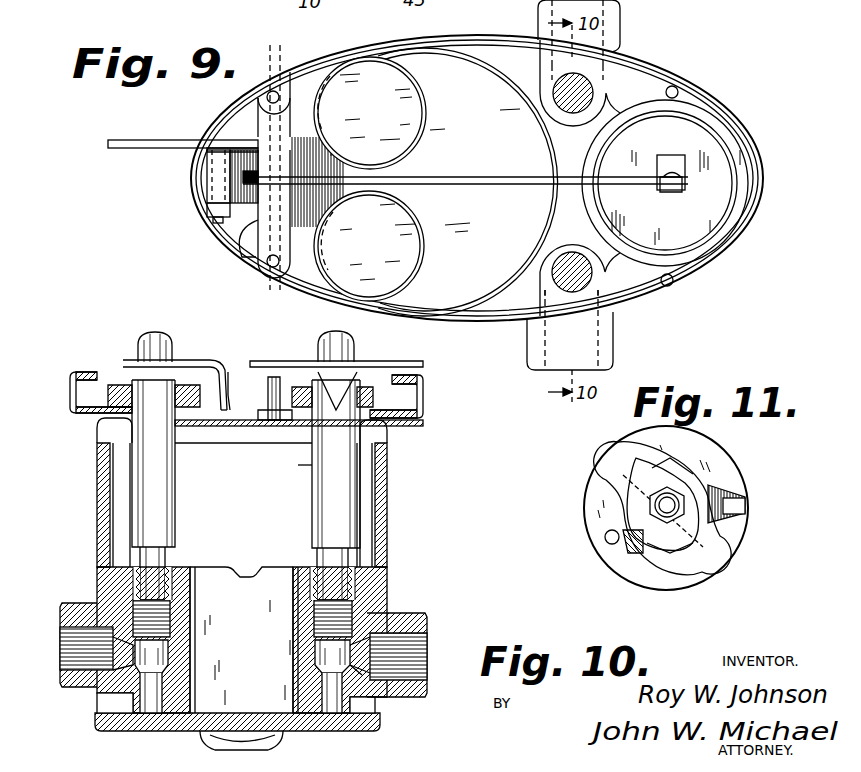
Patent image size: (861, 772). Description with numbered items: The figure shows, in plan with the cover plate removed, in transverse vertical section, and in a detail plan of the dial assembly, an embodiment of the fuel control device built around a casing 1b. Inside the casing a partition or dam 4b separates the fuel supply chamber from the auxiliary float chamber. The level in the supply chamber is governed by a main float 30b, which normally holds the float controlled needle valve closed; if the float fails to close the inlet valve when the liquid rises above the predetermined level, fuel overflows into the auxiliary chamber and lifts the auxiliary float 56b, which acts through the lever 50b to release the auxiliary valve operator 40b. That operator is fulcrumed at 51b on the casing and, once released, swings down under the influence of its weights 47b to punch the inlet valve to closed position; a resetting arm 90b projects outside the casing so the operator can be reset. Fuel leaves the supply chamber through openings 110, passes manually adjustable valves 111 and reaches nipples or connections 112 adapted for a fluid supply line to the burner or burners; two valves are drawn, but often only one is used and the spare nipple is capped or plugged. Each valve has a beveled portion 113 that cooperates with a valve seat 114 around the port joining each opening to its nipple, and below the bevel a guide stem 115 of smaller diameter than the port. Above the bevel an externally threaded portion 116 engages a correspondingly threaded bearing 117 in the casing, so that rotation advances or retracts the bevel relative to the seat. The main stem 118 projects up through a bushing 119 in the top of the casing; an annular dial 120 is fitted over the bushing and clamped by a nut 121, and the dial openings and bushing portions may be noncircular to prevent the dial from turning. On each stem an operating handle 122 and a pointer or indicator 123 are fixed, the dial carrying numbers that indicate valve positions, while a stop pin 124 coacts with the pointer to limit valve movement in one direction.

In FIG. 10, the casing 1b is at (385, 533).
In FIG. 9, the partition or dam 4b is at (597, 158).
In FIG. 10, the partition or dam 4b is at (275, 580).
In FIG. 9, the main float 30b is at (444, 182).
In FIG. 9, the auxiliary valve operator 40b is at (242, 260).
In FIG. 9, the weights 47b is at (370, 179).
In FIG. 9, the lever 50b is at (470, 177).
In FIG. 9, the fulcrum 51b is at (210, 218).
In FIG. 9, the auxiliary float 56b is at (665, 183).
In FIG. 9, the resetting arm 90b is at (167, 140).
In FIG. 9, the openings 110 is at (608, 105).
In FIG. 10, the openings 110 is at (180, 720).
In FIG. 9, the manually adjustable valves 111 is at (558, 80).
In FIG. 10, the manually adjustable valves 111 is at (155, 515).
In FIG. 9, the nipples or connections 112 is at (612, 34).
In FIG. 10, the nipples or connections 112 is at (80, 606).
In FIG. 10, the beveled portion 113 is at (168, 665).
In FIG. 10, the valve seat 114 is at (365, 672).
In FIG. 10, the guide stem 115 is at (322, 688).
In FIG. 10, the externally threaded portion 116 is at (170, 617).
In FIG. 10, the threaded bearing 117 is at (182, 590).
In FIG. 10, the main stem 118 is at (335, 472).
In FIG. 10, the bushings 119 is at (120, 385).
In FIG. 10, the annular dial 120 is at (423, 422).
In FIG. 11, the annular dial 120 is at (633, 576).
In FIG. 10, the nut 121 is at (112, 372).
In FIG. 10, the operating handle 122 is at (170, 360).
In FIG. 11, the operating handle 122 is at (720, 553).
In FIG. 10, the pointer or indicator 123 is at (228, 365).
In FIG. 11, the pointer or indicator 123 is at (625, 550).
In FIG. 10, the stop pin 124 is at (250, 361).
In FIG. 11, the stop pin 124 is at (605, 540).